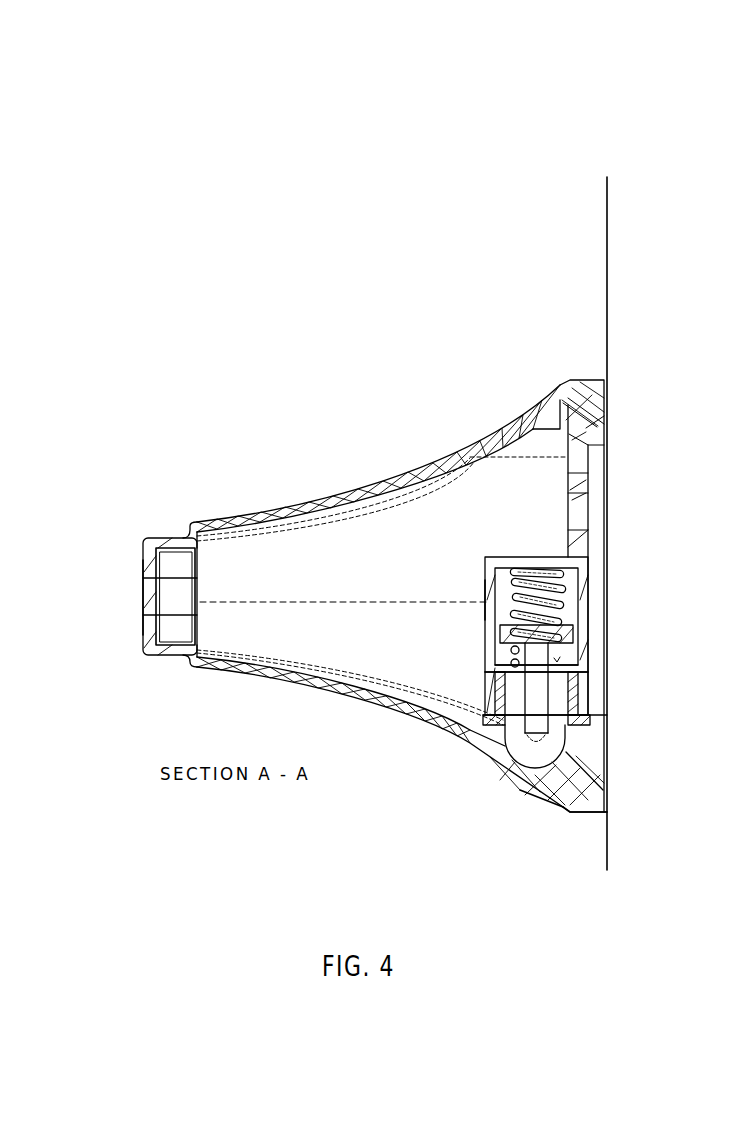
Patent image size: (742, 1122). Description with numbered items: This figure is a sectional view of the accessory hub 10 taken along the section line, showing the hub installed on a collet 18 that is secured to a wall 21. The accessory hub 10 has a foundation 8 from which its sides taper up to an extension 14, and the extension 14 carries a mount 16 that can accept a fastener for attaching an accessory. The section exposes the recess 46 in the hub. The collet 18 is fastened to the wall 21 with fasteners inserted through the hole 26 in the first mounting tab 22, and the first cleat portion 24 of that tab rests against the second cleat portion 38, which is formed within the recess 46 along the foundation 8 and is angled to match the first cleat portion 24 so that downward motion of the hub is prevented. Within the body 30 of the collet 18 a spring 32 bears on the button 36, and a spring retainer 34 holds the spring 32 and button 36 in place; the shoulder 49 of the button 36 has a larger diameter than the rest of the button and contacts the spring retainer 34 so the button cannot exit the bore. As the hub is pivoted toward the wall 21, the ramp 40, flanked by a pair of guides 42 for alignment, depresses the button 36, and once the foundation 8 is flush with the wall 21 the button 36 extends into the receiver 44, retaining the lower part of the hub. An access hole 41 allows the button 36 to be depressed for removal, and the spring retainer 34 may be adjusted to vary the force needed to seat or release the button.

The foundation 8 is at (583, 376).
The accessory hub 10 is at (288, 446).
The extension 14 is at (160, 532).
The mount 16 is at (138, 595).
The collet 18 is at (485, 554).
The wall 21 is at (610, 250).
The first mounting tab 22 is at (563, 463).
The first cleat portion 24 is at (584, 438).
The hole 26 is at (566, 508).
The body 30 is at (483, 645).
The spring 32 is at (567, 587).
The spring retainer 34 is at (582, 692).
The button 36 is at (526, 760).
The second cleat portion 38 is at (599, 409).
The ramp 40 is at (587, 751).
The access hole 41 is at (537, 783).
The guides 42 is at (492, 593).
The receiver 44 is at (608, 795).
The recess 46 is at (320, 639).
The shoulder 49 is at (577, 645).